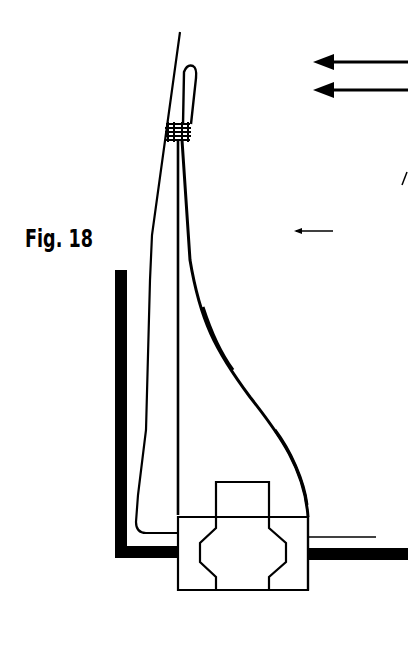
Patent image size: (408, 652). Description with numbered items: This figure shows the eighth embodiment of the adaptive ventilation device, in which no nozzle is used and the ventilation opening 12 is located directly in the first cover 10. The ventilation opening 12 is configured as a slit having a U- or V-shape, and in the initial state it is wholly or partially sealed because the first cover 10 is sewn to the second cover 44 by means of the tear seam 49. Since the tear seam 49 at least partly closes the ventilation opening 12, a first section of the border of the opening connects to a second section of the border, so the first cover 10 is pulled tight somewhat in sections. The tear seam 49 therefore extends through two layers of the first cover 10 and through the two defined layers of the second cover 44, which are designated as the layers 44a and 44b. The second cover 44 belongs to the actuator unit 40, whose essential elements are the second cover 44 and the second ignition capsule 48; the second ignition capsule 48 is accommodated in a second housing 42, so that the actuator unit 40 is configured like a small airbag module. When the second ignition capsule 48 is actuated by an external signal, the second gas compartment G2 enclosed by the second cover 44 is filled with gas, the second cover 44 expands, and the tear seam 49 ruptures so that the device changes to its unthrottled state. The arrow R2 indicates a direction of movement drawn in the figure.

The first cover 10 is at (147, 253).
The ventilation opening 12 is at (167, 110).
The tear seam 49 is at (190, 136).
The second cover 44 is at (250, 397).
The first layer of the second cover 44a is at (178, 375).
The second layer of the second cover 44b is at (233, 370).
The second gas compartment G2 is at (262, 468).
The second ignition capsule 48 is at (263, 495).
The actuator unit 40 is at (190, 572).
The second housing 42 is at (297, 577).
The direction of movement R2 is at (313, 220).